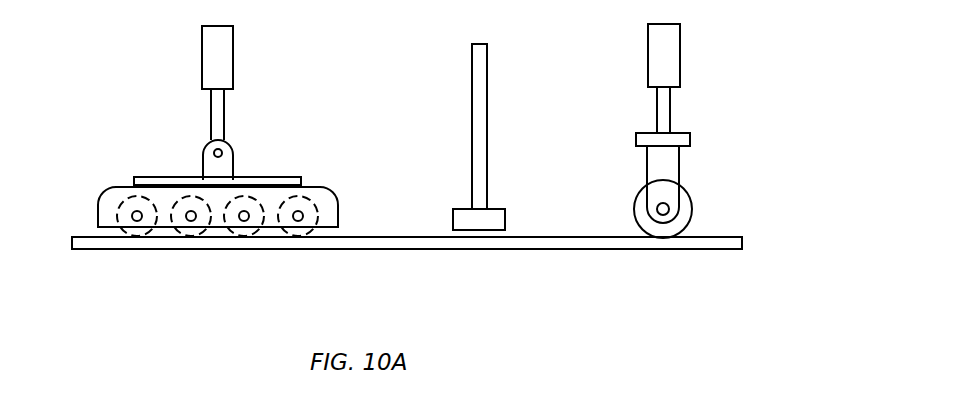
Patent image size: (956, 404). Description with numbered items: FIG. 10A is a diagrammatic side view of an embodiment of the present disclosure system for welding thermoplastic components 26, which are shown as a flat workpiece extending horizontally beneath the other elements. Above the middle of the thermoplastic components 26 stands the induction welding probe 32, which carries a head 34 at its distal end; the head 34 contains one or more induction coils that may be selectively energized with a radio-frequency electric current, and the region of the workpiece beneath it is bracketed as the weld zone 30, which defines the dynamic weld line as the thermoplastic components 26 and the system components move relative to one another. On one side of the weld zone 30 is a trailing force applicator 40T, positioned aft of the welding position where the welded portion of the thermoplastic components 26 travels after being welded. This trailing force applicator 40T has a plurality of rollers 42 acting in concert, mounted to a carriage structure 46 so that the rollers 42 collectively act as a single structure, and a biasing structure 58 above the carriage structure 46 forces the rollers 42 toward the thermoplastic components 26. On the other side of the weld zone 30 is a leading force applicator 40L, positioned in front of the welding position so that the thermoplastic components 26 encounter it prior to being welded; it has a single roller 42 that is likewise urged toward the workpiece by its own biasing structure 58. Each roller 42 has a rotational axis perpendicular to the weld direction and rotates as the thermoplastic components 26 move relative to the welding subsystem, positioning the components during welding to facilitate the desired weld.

The thermoplastic components 26 is at (689, 249).
The weld zone 30 is at (509, 178).
The induction welding probe 32 is at (492, 142).
The head 34 is at (505, 220).
The trailing force applicator 40T is at (132, 123).
The leading force applicator 40L is at (692, 78).
The roller 42 is at (137, 233).
The carriage structure 46 is at (98, 216).
The biasing structure 58 is at (223, 47).